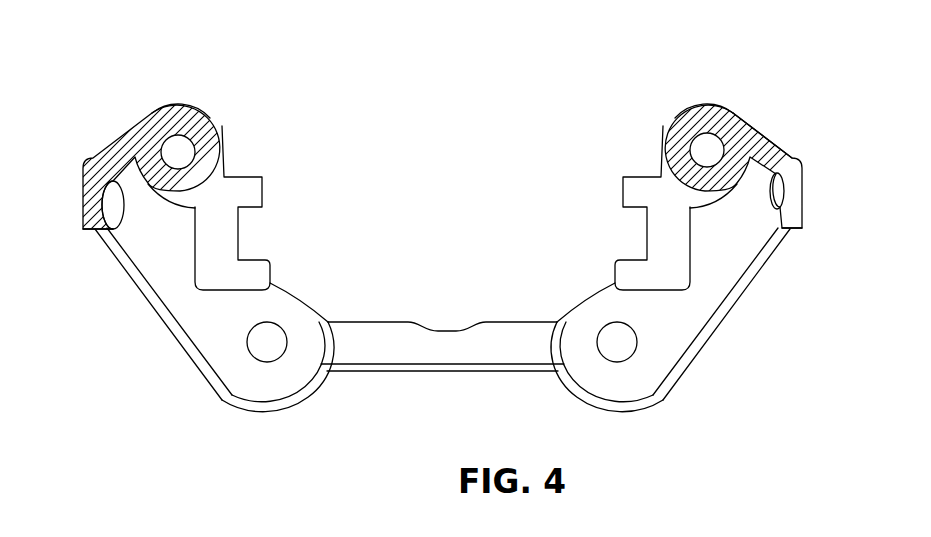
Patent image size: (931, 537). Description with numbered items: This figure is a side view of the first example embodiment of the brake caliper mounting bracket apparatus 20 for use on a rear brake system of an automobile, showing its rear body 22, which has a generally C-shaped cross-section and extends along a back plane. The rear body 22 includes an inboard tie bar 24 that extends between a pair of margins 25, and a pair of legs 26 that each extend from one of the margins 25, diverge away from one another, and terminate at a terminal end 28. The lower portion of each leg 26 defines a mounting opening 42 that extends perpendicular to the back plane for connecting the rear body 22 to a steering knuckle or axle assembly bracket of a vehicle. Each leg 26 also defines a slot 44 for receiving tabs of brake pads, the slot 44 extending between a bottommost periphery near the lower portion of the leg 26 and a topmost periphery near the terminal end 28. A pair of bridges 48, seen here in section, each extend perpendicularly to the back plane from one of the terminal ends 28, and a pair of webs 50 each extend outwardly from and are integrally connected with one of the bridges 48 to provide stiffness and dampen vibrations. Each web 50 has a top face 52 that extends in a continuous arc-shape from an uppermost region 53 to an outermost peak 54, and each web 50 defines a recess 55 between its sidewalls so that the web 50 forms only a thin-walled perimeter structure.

The brake caliper mounting bracket apparatus 20 is at (476, 154).
The rear body 22 is at (165, 337).
The inboard tie bar 24 is at (423, 362).
The margins 25 is at (350, 328).
The legs 26 is at (708, 310).
The terminal end 28 is at (176, 228).
The mounting openings 42 is at (280, 358).
The slot 44 is at (238, 242).
The bridges 48 is at (207, 119).
The webs 50 is at (137, 112).
The top face 52 is at (730, 106).
The uppermost region 53 is at (170, 104).
The outermost peak 54 is at (90, 230).
The recess 55 is at (122, 228).